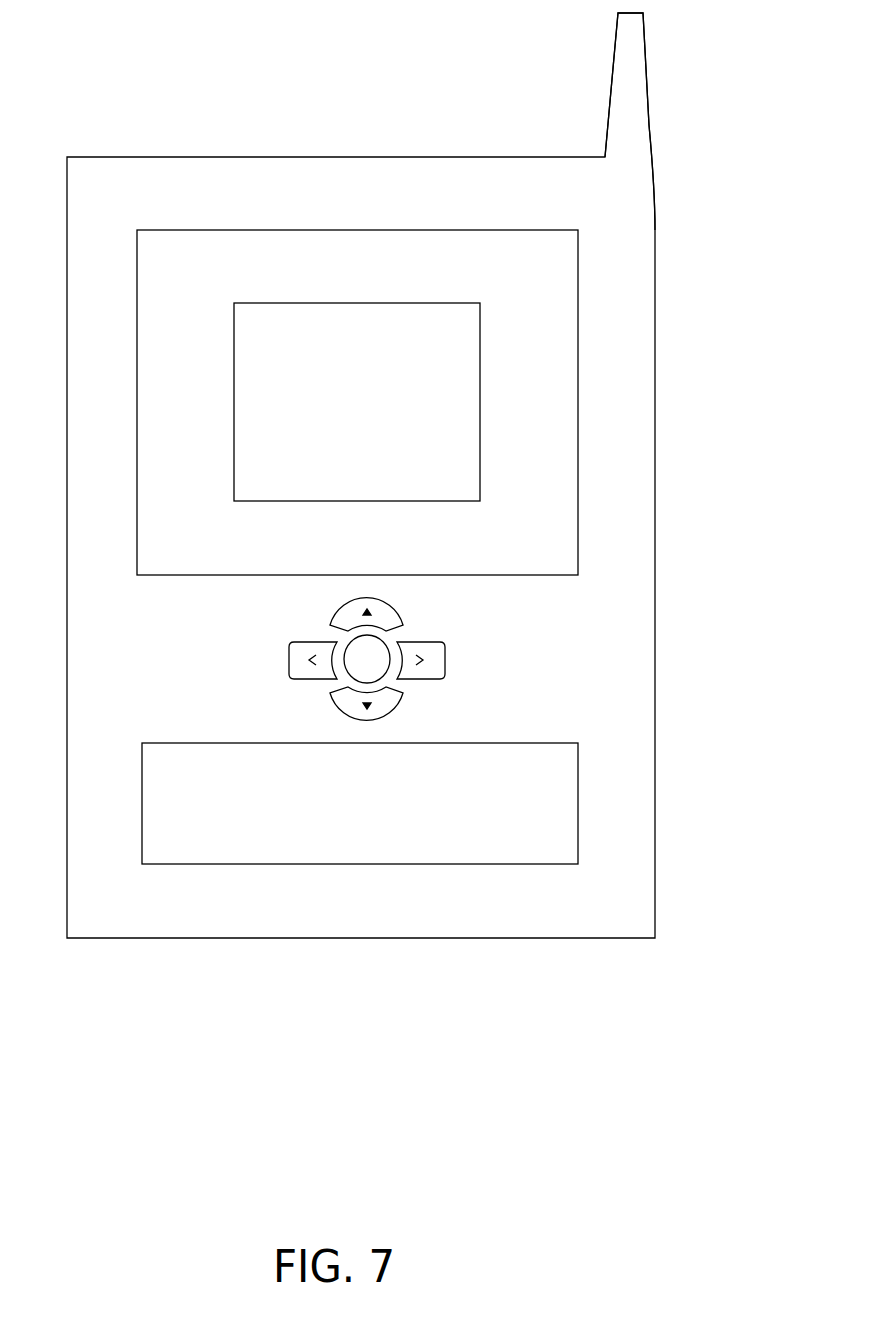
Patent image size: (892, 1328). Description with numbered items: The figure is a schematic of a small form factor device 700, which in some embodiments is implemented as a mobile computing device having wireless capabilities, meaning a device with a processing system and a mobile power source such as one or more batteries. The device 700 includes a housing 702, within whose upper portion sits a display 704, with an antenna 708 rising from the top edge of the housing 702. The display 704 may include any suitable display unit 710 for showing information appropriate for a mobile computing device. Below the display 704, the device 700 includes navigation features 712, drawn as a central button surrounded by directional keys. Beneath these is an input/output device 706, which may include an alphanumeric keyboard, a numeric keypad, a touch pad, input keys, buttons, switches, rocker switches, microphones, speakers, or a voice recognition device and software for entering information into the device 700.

The small form factor device 700 is at (353, 1231).
The housing 702 is at (655, 530).
The display 704 is at (515, 230).
The input/output (I/O) device 706 is at (578, 777).
The antenna 708 is at (614, 62).
The display unit 710 is at (420, 303).
The navigation features 712 is at (455, 650).